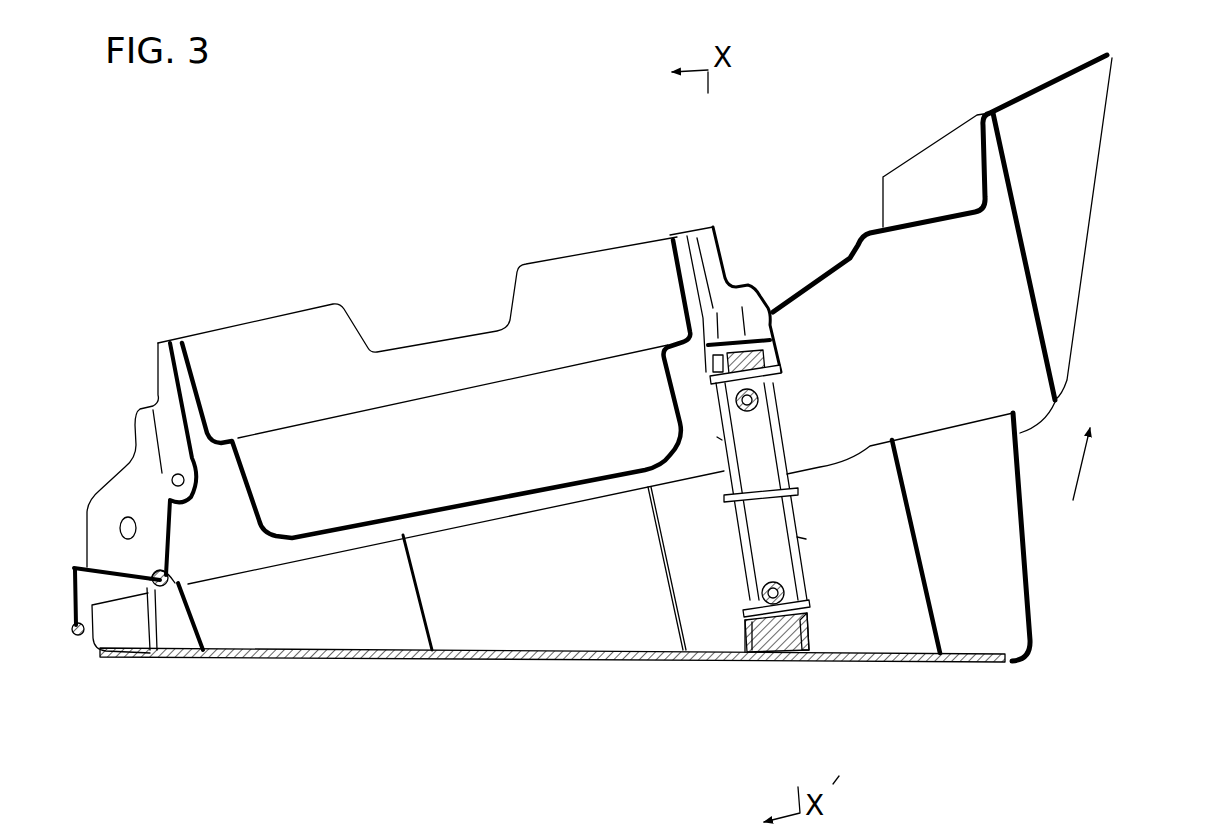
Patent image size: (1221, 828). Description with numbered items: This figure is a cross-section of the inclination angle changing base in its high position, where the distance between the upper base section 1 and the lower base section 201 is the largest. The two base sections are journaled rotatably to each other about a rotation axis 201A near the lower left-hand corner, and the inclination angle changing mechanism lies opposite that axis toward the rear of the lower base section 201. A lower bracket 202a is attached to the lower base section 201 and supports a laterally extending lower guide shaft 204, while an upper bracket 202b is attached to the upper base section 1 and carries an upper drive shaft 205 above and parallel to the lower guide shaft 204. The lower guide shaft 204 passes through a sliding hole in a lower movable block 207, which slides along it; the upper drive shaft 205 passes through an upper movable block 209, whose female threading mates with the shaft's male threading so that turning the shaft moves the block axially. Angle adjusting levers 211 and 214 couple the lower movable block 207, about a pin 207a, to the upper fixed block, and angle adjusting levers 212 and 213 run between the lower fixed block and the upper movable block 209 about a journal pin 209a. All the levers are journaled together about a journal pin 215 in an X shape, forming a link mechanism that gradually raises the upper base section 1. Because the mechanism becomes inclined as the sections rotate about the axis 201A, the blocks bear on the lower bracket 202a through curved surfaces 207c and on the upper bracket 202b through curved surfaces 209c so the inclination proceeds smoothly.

The upper base section 1 is at (257, 281).
The lower base section 201 is at (413, 653).
The rotation axis 201A is at (155, 590).
The lower bracket 202a is at (743, 658).
The upper bracket 202b is at (687, 243).
The lower guide shaft 204 is at (807, 590).
The upper drive shaft 205 is at (785, 393).
The lower movable block 207 is at (777, 640).
The pin 207a is at (810, 610).
The curved surfaces 207c is at (803, 663).
The upper movable block 209 is at (725, 312).
The journal pin 209a is at (784, 360).
The curved surfaces 209c is at (780, 303).
The angle adjusting lever 211 is at (747, 540).
The angle adjusting lever 212 is at (717, 437).
The angle adjusting lever 213 is at (783, 443).
The angle adjusting lever 214 is at (797, 537).
The journal pin 215 is at (800, 493).